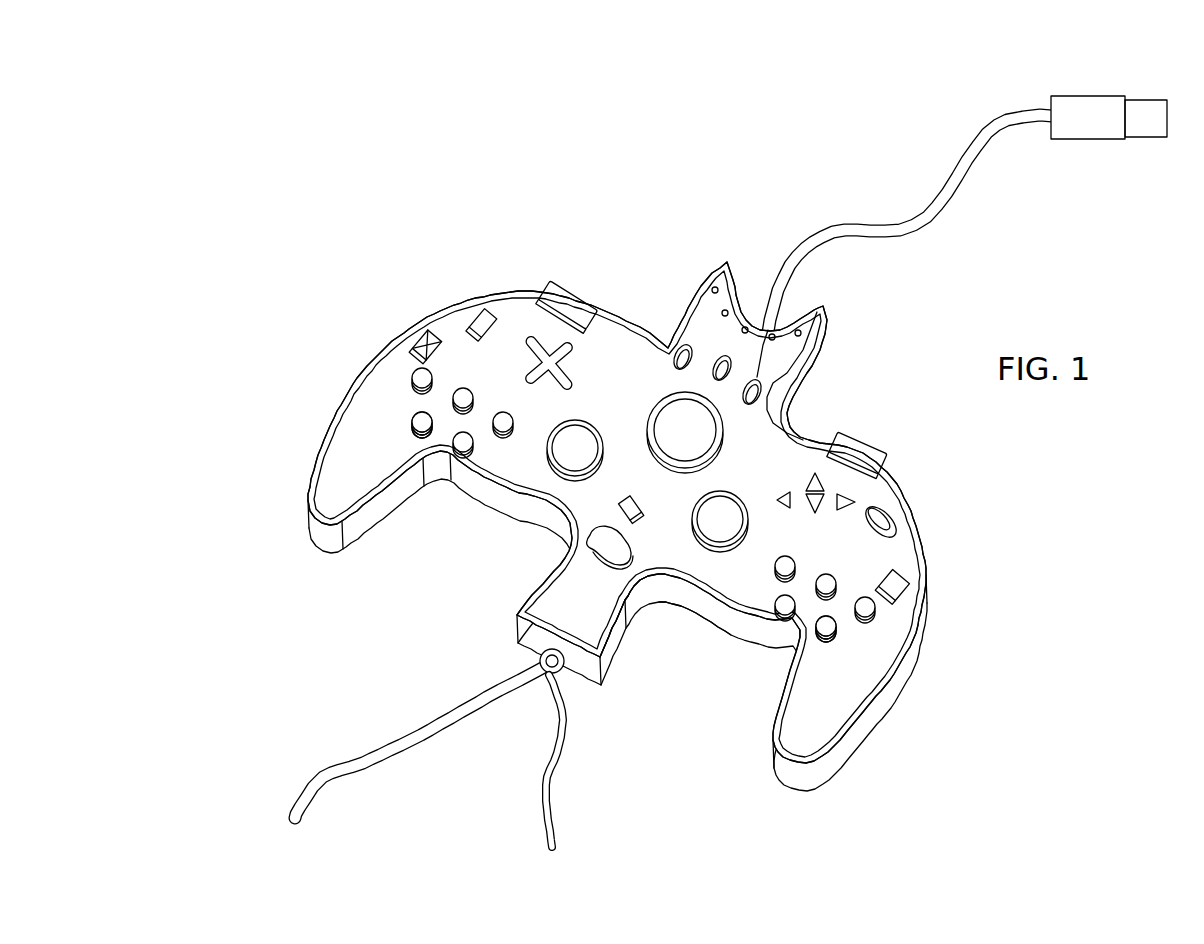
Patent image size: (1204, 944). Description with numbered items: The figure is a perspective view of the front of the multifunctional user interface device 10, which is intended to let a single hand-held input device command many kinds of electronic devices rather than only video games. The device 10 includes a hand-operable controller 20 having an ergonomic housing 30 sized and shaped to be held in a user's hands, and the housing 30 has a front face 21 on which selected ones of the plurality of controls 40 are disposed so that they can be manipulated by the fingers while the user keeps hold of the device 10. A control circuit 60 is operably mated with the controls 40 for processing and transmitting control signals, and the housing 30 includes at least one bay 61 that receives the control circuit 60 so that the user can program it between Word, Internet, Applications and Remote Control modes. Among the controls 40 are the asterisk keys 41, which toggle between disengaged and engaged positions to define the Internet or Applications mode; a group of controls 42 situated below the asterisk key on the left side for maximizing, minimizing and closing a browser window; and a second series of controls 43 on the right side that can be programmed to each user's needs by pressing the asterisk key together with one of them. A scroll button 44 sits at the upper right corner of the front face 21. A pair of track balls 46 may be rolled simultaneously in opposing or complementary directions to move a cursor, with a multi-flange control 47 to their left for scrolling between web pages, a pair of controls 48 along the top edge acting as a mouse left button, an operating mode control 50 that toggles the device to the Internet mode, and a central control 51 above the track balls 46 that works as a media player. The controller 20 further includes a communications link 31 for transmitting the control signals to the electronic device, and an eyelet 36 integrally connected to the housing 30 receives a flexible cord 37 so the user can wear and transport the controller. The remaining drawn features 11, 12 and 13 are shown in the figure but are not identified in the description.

The multifunctional user interface device 10 is at (678, 160).
The indicator 11 is at (724, 360).
The indicator 12 is at (678, 360).
The bumper 13 is at (763, 320).
The hand-operable controller 20 is at (893, 480).
The front face 21 is at (753, 453).
The ergonomic housing 30 is at (887, 690).
The communications link 31 is at (903, 227).
The eyelet 36 is at (543, 683).
The flexible cord 37 is at (553, 787).
The controls 40 is at (462, 343).
The "*" key 41 is at (425, 335).
The group of controls 42 is at (380, 428).
The second series of controls 43 is at (833, 672).
The scroll button 44 is at (888, 514).
The track balls 46 is at (565, 450).
The multi-flange control 47 is at (540, 342).
The pair of controls 48 is at (583, 290).
The operating mode control 50 is at (587, 547).
The central control 51 is at (678, 430).
The control circuit 60 is at (743, 640).
The bay 61 is at (688, 612).